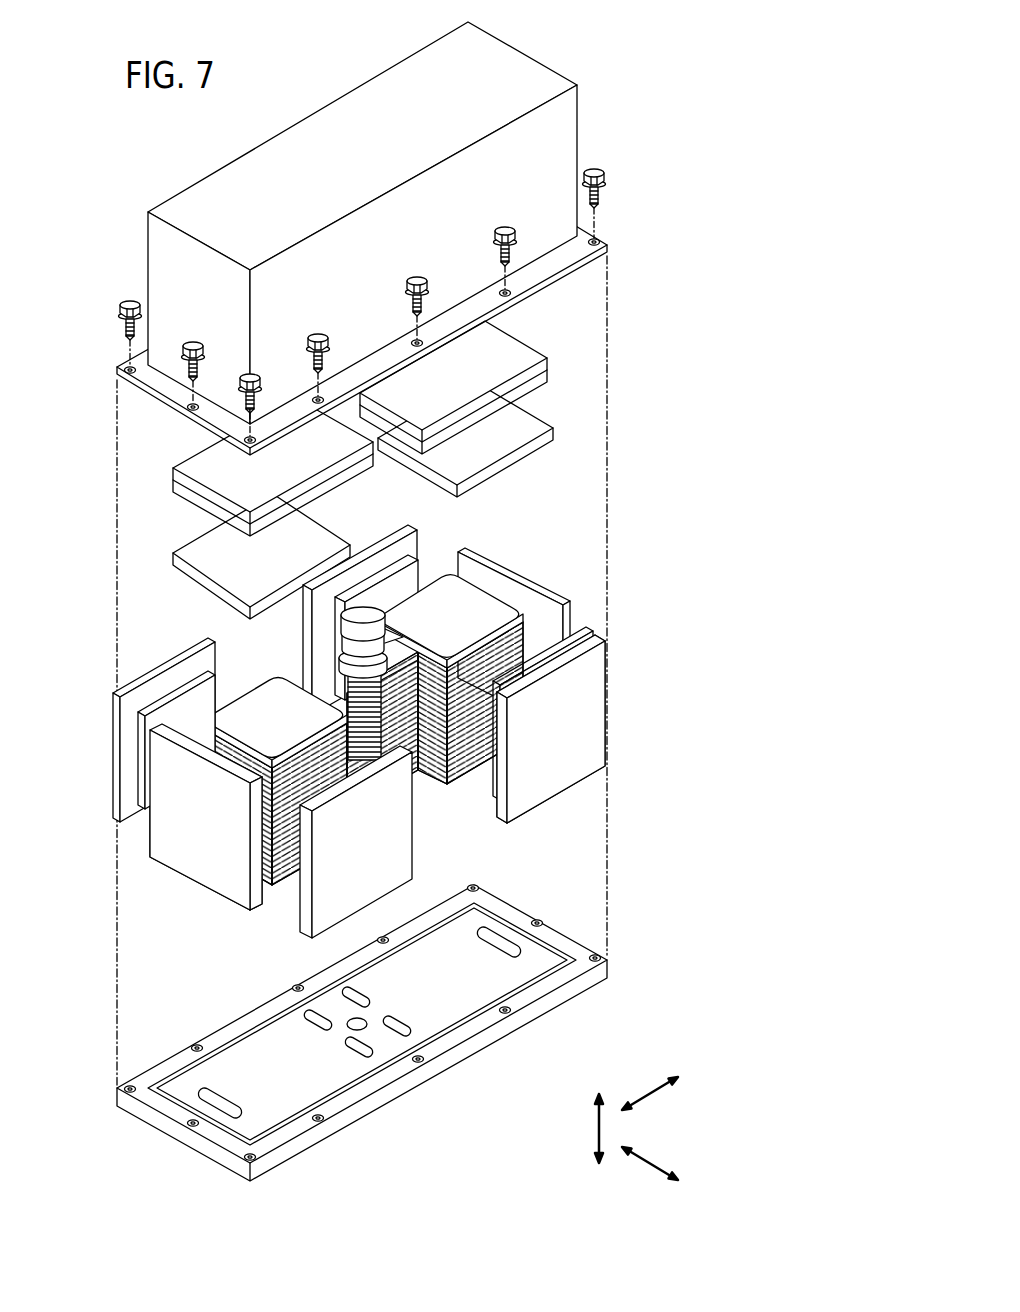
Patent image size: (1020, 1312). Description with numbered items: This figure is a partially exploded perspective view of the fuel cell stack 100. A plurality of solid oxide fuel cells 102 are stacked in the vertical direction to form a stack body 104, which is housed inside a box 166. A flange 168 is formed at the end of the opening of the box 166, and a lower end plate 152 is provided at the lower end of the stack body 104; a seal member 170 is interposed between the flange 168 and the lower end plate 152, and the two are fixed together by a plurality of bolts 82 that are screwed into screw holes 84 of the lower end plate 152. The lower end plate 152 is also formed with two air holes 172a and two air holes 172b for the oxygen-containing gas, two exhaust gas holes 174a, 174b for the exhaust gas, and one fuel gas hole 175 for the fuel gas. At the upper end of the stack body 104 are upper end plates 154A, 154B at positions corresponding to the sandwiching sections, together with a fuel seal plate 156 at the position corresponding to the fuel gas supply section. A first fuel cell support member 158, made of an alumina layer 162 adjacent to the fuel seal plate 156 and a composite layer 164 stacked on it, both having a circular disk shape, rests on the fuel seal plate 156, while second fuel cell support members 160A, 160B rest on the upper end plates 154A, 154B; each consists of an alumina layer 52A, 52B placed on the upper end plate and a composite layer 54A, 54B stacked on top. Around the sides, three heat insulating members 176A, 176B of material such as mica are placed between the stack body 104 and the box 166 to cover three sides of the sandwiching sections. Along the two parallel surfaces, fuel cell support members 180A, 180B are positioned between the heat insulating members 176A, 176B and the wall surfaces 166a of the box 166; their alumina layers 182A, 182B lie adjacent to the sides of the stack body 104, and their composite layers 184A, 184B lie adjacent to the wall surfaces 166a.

The fuel cell stack 100 is at (652, 77).
The box 166 is at (146, 242).
The wall surfaces of the box 166a is at (556, 135).
The bolts 82 is at (603, 176).
The flange 168 is at (165, 388).
The second fuel cell support member 160A is at (550, 384).
The composite layer 54A is at (522, 338).
The alumina layer 52A is at (522, 415).
The upper end plate 154A is at (548, 425).
The second fuel cell support member 160B is at (189, 467).
The composite layer 54B is at (190, 462).
The alumina layer 52B is at (182, 490).
The upper end plate 154B is at (190, 549).
The heat insulating member 176A is at (388, 582).
The heat insulating member 176B is at (152, 722).
The fuel cell support member 180A is at (619, 713).
The alumina layer 182A is at (580, 630).
The composite layer 184A is at (595, 656).
The fuel cell support member 180B is at (128, 713).
The alumina layer 182B is at (203, 645).
The composite layer 184B is at (173, 657).
The solid oxide fuel cells 102 is at (472, 752).
The stack body 104 is at (488, 582).
The first fuel cell support member 158 is at (399, 674).
The composite layer 164 is at (362, 616).
The alumina layer 162 is at (368, 645).
The fuel seal plate 156 is at (350, 660).
The lower end plate 152 is at (550, 1018).
The seal member 170 is at (515, 908).
The exhaust gas hole 174a is at (515, 940).
The exhaust gas hole 174b is at (230, 1110).
The air holes 172a is at (410, 1032).
The air holes 172b is at (355, 1000).
The fuel gas hole 175 is at (358, 1018).
The screw holes 84 is at (505, 1007).